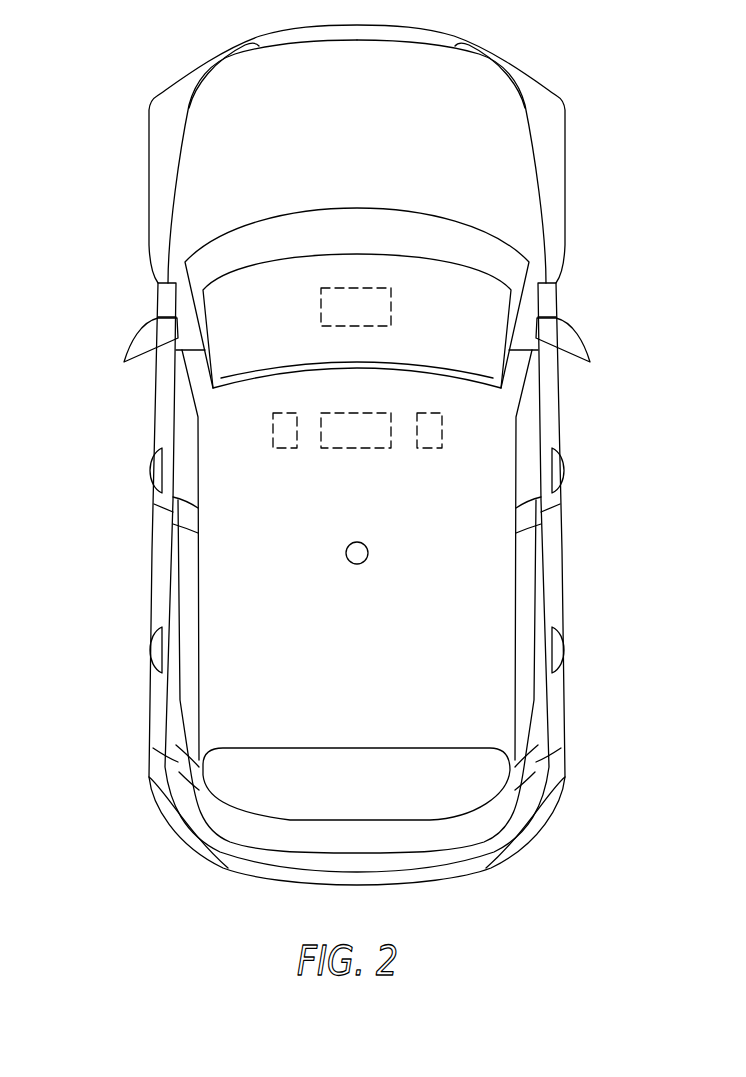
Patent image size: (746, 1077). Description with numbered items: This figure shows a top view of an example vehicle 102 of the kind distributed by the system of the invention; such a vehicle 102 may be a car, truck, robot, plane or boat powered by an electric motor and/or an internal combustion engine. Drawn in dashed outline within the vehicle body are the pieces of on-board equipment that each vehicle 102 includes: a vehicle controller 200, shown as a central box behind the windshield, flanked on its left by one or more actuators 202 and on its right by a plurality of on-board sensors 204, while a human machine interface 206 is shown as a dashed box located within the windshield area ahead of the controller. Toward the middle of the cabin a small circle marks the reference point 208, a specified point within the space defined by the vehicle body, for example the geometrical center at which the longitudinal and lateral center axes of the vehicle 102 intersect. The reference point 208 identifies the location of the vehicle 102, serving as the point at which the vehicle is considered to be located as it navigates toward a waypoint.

The vehicle 102 is at (378, 628).
The vehicle controller 200 is at (347, 413).
The actuators 202 is at (273, 423).
The on-board sensors 204 is at (442, 423).
The human machine interface 206 is at (391, 307).
The reference point 208 is at (346, 557).